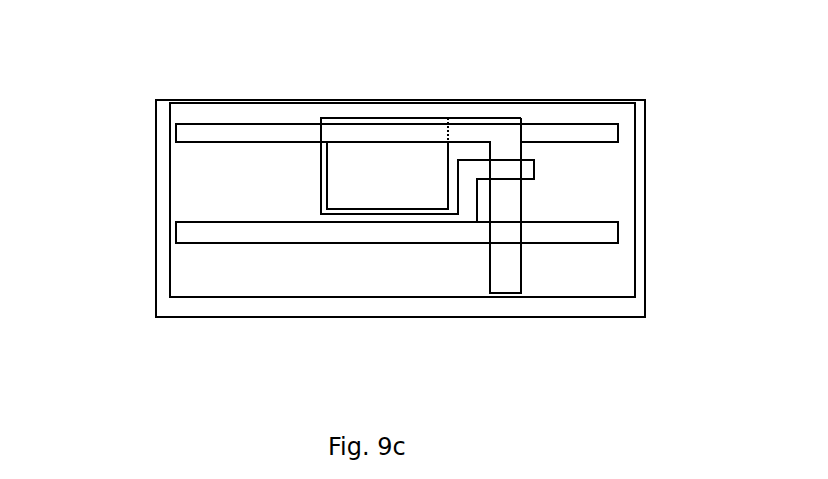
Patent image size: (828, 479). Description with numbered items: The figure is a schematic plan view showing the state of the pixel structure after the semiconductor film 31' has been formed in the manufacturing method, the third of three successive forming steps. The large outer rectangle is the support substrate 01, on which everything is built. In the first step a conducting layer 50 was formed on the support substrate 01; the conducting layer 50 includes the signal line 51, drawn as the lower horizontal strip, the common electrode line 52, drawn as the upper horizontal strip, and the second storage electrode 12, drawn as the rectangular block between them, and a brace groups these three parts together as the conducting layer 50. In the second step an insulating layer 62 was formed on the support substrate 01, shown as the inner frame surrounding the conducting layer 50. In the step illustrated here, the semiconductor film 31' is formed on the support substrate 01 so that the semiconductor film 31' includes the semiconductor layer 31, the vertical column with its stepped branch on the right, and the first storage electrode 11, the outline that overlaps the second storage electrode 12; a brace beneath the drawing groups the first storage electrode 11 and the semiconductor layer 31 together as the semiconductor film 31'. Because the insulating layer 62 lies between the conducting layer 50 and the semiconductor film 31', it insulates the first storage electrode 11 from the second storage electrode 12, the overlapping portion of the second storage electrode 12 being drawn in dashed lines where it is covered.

The support substrate 01 is at (387, 100).
The insulating layer 62 is at (635, 173).
The conducting layer 50 is at (325, 201).
The common electrode line 52 is at (215, 130).
The second storage electrode 12 is at (327, 196).
The signal line 51 is at (359, 253).
The semiconductor film 31' is at (423, 268).
The first storage electrode 11 is at (373, 216).
The semiconductor layer 31 is at (474, 238).